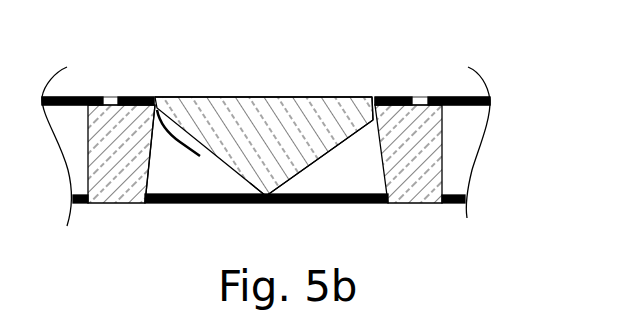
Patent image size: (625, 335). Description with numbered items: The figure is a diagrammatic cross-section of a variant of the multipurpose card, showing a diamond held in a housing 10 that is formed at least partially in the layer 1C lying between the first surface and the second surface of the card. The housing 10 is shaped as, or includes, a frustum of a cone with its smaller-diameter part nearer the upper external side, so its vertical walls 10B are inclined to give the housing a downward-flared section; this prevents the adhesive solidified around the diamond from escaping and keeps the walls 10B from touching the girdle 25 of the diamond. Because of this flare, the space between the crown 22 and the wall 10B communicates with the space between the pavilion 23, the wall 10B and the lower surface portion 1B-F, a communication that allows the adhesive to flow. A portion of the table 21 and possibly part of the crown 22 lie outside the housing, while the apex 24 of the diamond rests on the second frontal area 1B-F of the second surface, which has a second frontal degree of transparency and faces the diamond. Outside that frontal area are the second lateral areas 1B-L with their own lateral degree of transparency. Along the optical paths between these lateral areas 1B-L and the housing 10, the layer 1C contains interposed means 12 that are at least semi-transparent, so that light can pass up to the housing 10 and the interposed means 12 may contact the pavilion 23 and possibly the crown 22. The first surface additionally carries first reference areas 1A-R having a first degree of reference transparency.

The first reference area 1A-R is at (110, 97).
The layer 1C is at (465, 132).
The second lateral area 1B-L is at (118, 203).
The second frontal area 1B-F is at (203, 203).
The interposed means 12 is at (117, 162).
The vertical wall 10B is at (148, 173).
The housing 10 is at (158, 106).
The table 21 is at (249, 97).
The crown 22 is at (360, 100).
The pavilion 23 is at (315, 157).
The apex 24 is at (263, 183).
The girdle 25 is at (168, 130).